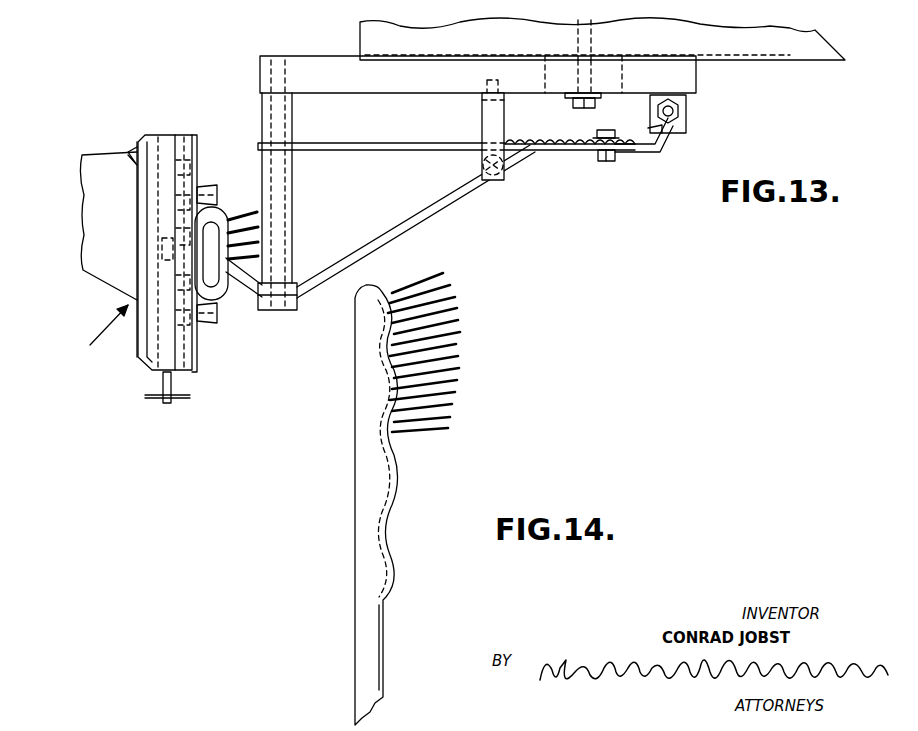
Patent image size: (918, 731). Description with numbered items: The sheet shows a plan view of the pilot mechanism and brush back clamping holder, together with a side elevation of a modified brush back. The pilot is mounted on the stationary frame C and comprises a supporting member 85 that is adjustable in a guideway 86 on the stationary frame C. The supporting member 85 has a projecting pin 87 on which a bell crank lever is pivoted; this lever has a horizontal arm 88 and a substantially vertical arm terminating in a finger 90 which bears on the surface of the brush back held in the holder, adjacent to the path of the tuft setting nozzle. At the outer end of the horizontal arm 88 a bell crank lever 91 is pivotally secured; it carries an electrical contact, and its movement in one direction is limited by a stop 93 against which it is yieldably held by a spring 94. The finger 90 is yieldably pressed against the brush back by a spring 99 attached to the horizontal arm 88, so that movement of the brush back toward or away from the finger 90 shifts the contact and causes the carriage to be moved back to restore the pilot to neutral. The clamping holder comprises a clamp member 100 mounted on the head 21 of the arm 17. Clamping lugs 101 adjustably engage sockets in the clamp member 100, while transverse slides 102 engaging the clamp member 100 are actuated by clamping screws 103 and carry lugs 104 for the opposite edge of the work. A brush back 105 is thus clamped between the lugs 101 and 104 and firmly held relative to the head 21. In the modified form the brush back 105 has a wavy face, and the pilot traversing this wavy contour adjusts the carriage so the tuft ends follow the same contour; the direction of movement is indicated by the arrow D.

In FIG. 13, the arm 17 is at (97, 187).
In FIG. 13, the head 21 is at (137, 165).
In FIG. 13, the supporting member 85 is at (422, 88).
In FIG. 13, the guideway 86 is at (706, 62).
In FIG. 13, the projecting pin 87 is at (277, 208).
In FIG. 13, the horizontal arm 88 is at (462, 183).
In FIG. 13, the finger 90 is at (243, 275).
In FIG. 13, the bell crank lever 91 is at (642, 133).
In FIG. 13, the stop 93 is at (626, 154).
In FIG. 13, the spring 94 is at (547, 142).
In FIG. 13, the spring 99 is at (506, 180).
In FIG. 13, the clamp member 100 is at (152, 142).
In FIG. 13, the clamping lugs 101 is at (207, 192).
In FIG. 13, the transverse slides 102 is at (189, 140).
In FIG. 13, the clamping screws 103 is at (174, 385).
In FIG. 13, the lugs 104 is at (212, 322).
In FIG. 13, the brush back 105 is at (222, 288).
In FIG. 14, the brush back 105 is at (362, 450).
In FIG. 13, the stationary frame C is at (760, 50).
In FIG. 13, the direction arrow D is at (99, 335).